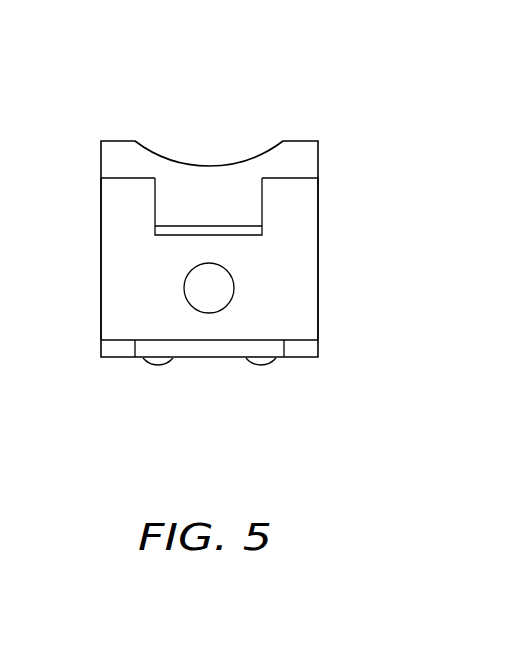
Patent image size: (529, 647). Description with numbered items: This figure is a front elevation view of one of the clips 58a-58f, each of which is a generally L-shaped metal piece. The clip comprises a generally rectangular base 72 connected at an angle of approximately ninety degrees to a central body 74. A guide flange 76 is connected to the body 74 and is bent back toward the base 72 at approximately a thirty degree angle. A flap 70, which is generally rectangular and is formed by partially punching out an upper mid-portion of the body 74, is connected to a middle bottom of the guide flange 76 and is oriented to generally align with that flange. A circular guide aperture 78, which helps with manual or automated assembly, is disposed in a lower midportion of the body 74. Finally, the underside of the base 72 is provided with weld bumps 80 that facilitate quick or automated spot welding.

The clips 58a-58f is at (202, 220).
The flap 70 is at (208, 210).
The base 72 is at (120, 353).
The central body 74 is at (241, 217).
The guide flange 76 is at (303, 153).
The circular guide aperture 78 is at (184, 290).
The weld bumps 80 is at (209, 393).